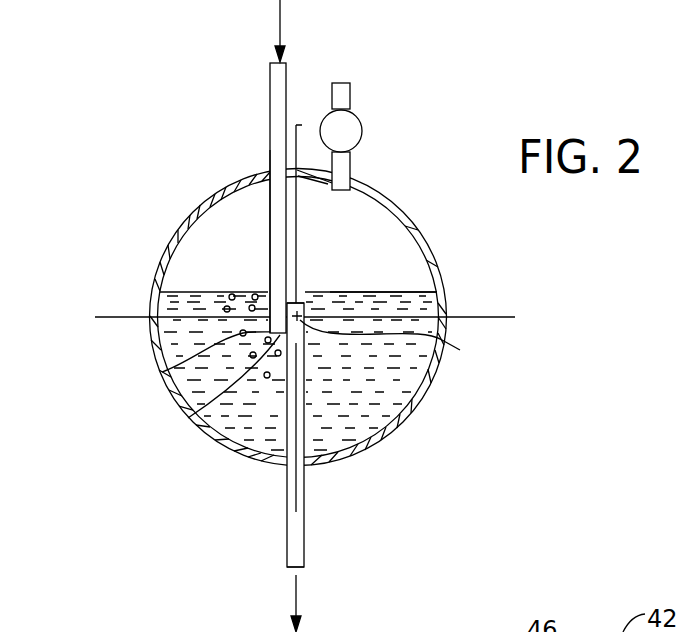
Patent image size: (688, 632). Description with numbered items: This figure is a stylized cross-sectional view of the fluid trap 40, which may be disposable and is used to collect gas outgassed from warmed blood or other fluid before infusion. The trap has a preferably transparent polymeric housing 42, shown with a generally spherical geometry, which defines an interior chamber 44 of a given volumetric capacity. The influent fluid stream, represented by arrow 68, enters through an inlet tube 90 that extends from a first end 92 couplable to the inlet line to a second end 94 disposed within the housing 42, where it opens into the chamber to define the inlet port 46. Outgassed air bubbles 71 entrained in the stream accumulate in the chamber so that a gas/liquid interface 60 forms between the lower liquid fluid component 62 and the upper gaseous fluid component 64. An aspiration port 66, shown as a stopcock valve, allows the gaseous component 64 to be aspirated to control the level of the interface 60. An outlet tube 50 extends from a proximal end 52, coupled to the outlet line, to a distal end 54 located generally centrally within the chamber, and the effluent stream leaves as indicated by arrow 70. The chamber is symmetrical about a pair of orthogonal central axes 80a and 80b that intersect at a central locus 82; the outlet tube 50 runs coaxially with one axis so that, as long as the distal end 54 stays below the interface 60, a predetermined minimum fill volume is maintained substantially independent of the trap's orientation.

The fluid trap 40 is at (440, 118).
The housing 42 is at (420, 232).
The interior chamber 44 is at (237, 261).
The inlet port 46 is at (150, 373).
The outlet tube 50 is at (300, 555).
The proximal end 52 is at (305, 565).
The distal end 54 is at (304, 292).
The gas/liquid interface 60 is at (403, 293).
The liquid fluid component 62 is at (298, 373).
The gaseous fluid component 64 is at (375, 262).
The aspiration port 66 is at (350, 98).
The influent fluid stream arrow 68 is at (282, 13).
The effluent fluid stream arrow 70 is at (294, 585).
The outgassed air bubbles 71 is at (224, 306).
The central axis 80a is at (118, 313).
The central axis 80b is at (300, 125).
The central locus 82 is at (398, 344).
The inlet tube 90 is at (278, 165).
The first end 92 is at (270, 63).
The second end 94 is at (190, 417).